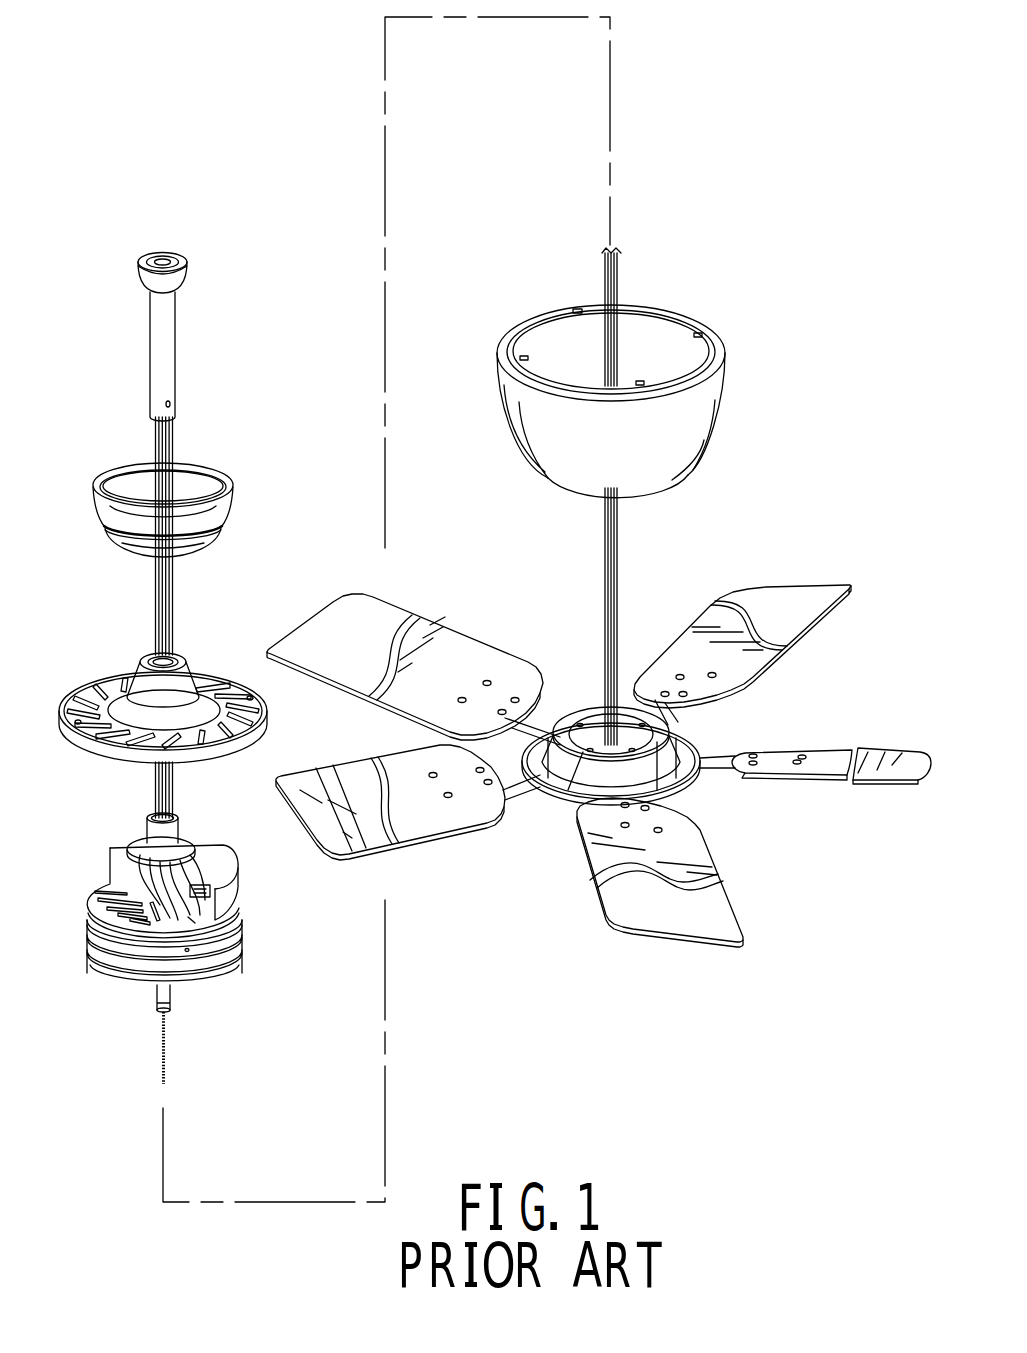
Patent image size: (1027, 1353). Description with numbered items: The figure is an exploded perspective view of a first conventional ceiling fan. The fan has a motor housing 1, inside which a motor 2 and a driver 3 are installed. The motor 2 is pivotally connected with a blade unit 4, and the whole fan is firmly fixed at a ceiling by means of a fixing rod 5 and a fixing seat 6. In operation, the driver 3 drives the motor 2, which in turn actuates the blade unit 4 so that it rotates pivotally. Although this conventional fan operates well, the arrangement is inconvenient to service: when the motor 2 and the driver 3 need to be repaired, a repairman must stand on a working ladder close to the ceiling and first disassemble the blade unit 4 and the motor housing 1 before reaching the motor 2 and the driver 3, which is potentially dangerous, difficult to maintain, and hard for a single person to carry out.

The motor housing 1 is at (726, 405).
The motor 2 is at (242, 943).
The driver 3 is at (110, 863).
The blade unit 4 is at (797, 593).
The fixing rod 5 is at (176, 364).
The fixing seat 6 is at (98, 520).